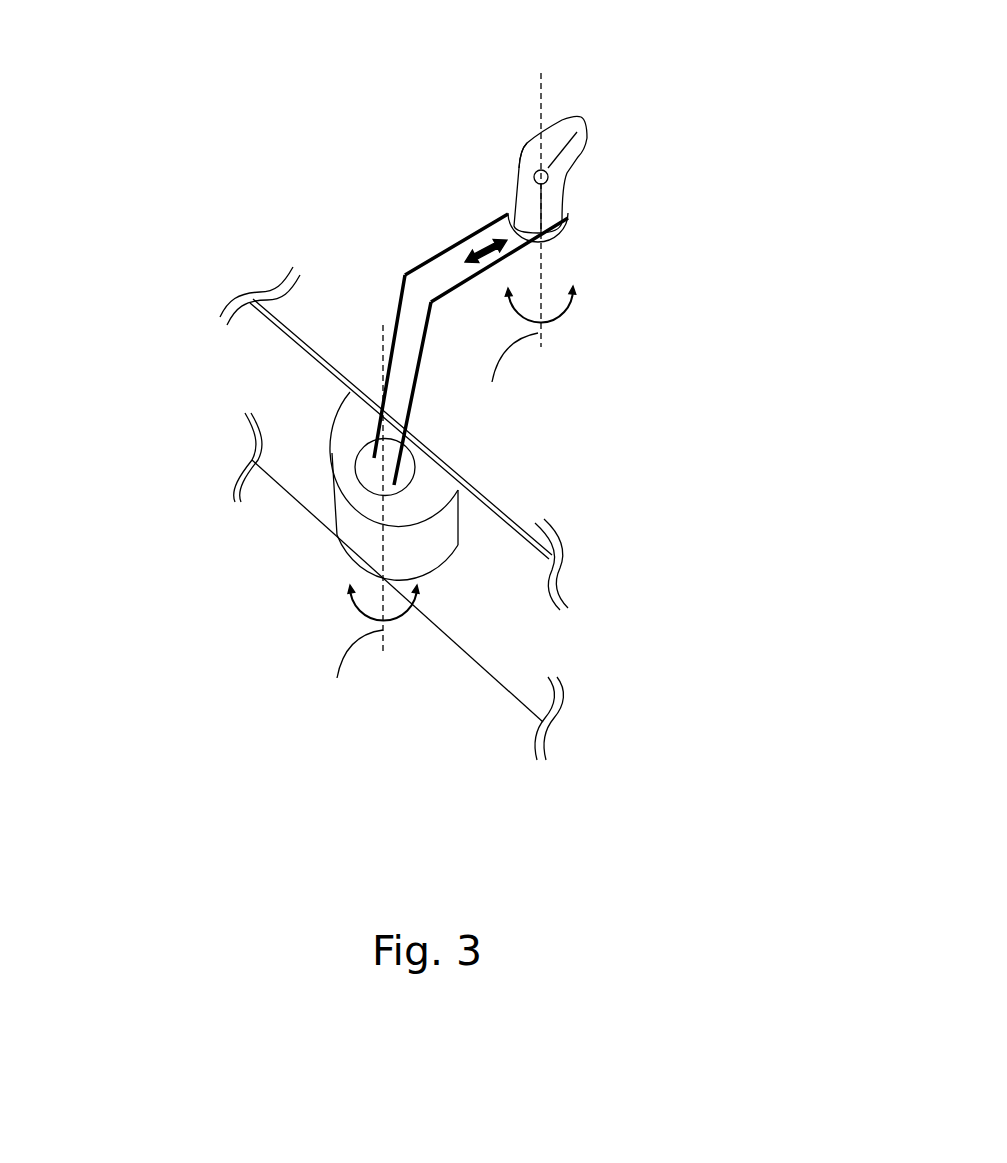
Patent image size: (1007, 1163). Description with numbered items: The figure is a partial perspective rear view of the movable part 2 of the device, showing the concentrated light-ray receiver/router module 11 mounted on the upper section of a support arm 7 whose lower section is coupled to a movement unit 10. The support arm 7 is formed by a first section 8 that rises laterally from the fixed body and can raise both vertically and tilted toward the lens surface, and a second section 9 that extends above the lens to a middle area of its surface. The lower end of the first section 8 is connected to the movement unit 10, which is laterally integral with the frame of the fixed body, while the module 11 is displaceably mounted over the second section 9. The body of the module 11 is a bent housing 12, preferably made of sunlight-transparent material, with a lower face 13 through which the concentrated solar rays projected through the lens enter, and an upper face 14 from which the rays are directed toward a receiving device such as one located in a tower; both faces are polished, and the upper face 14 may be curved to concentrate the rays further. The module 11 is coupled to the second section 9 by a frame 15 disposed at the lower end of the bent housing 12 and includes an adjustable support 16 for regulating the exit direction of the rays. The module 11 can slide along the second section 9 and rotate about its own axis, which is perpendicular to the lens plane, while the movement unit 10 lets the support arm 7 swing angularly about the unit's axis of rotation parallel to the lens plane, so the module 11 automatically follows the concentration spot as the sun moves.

The movable part 2 is at (630, 421).
The support arm 7 is at (403, 298).
The first section 8 is at (397, 315).
The second section 9 is at (470, 240).
The movement unit 10 is at (330, 435).
The module 11 is at (624, 171).
The bent housing 12 is at (520, 157).
The lower face 13 is at (553, 257).
The upper face 14 is at (603, 122).
The frame 15 is at (567, 237).
The adjustable support 16 is at (543, 205).